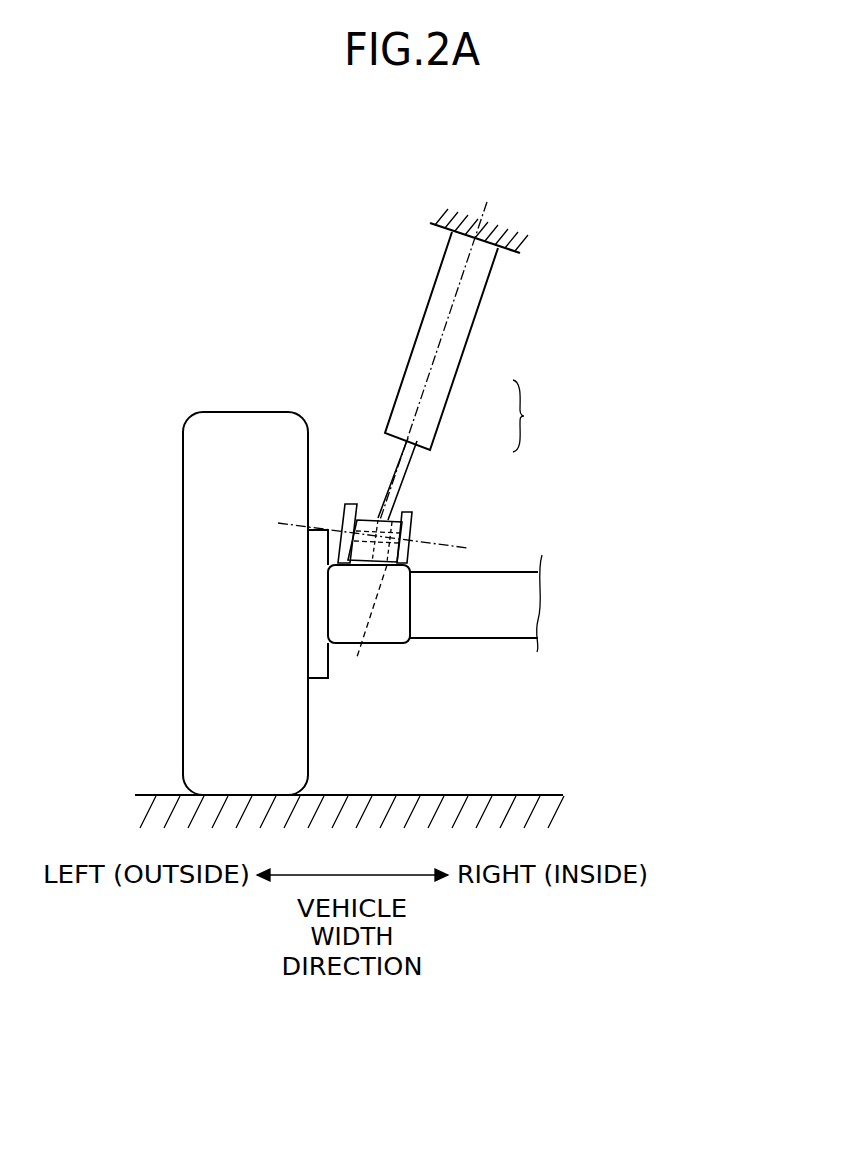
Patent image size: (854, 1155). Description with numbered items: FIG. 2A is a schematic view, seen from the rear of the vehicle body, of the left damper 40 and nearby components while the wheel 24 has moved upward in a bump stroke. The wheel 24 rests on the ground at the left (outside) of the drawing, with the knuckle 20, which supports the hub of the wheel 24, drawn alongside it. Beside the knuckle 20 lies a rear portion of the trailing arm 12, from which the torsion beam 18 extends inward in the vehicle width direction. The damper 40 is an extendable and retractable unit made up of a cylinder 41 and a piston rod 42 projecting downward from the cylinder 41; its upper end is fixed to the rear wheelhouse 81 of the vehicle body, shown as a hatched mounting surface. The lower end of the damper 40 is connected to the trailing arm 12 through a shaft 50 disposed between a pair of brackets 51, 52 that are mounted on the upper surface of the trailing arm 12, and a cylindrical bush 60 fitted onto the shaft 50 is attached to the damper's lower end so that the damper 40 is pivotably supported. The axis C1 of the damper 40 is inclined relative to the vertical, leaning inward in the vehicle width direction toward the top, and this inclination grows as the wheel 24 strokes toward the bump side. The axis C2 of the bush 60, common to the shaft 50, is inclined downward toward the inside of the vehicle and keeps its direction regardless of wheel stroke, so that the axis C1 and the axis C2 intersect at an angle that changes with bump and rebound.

The trailing arm 12 is at (393, 644).
The torsion beam 18 is at (487, 640).
The knuckle 20 is at (317, 679).
The wheel 24 is at (258, 412).
The damper 40 is at (539, 416).
The cylinder 41 is at (436, 402).
The piston rod 42 is at (408, 467).
The shaft 50 is at (366, 626).
The bracket 51 is at (412, 518).
The bracket 52 is at (356, 503).
The bush 60 is at (373, 520).
The rear wheelhouse 81 is at (442, 226).
The axis of the damper C1 is at (483, 213).
The axis of the bush C2 is at (463, 547).